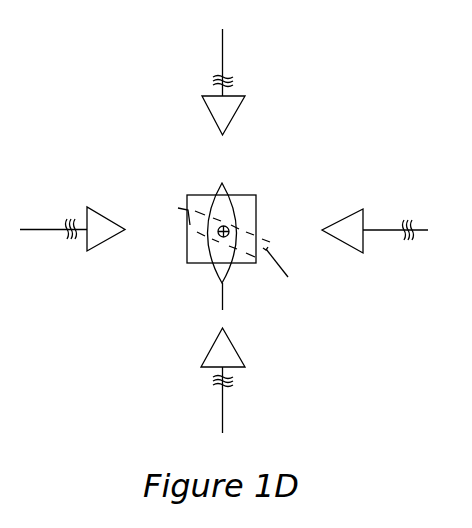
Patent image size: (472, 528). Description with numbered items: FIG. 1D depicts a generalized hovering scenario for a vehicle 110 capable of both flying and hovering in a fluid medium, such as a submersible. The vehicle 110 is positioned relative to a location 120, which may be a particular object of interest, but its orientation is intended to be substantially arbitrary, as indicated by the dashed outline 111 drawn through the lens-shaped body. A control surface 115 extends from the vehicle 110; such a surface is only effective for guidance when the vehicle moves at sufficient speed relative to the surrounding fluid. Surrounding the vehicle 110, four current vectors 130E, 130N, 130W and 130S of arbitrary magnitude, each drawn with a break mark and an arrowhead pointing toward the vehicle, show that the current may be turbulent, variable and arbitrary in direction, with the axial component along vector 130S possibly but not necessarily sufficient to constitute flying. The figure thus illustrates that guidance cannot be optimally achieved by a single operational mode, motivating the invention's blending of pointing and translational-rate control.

The vehicle 110 is at (224, 192).
The dashed outline 111 is at (265, 248).
The control surface 115 is at (222, 302).
The location 120 is at (256, 196).
The current vector 130S is at (222, 58).
The current vector 130E is at (32, 230).
The current vector 130W is at (378, 230).
The current vector 130N is at (222, 397).